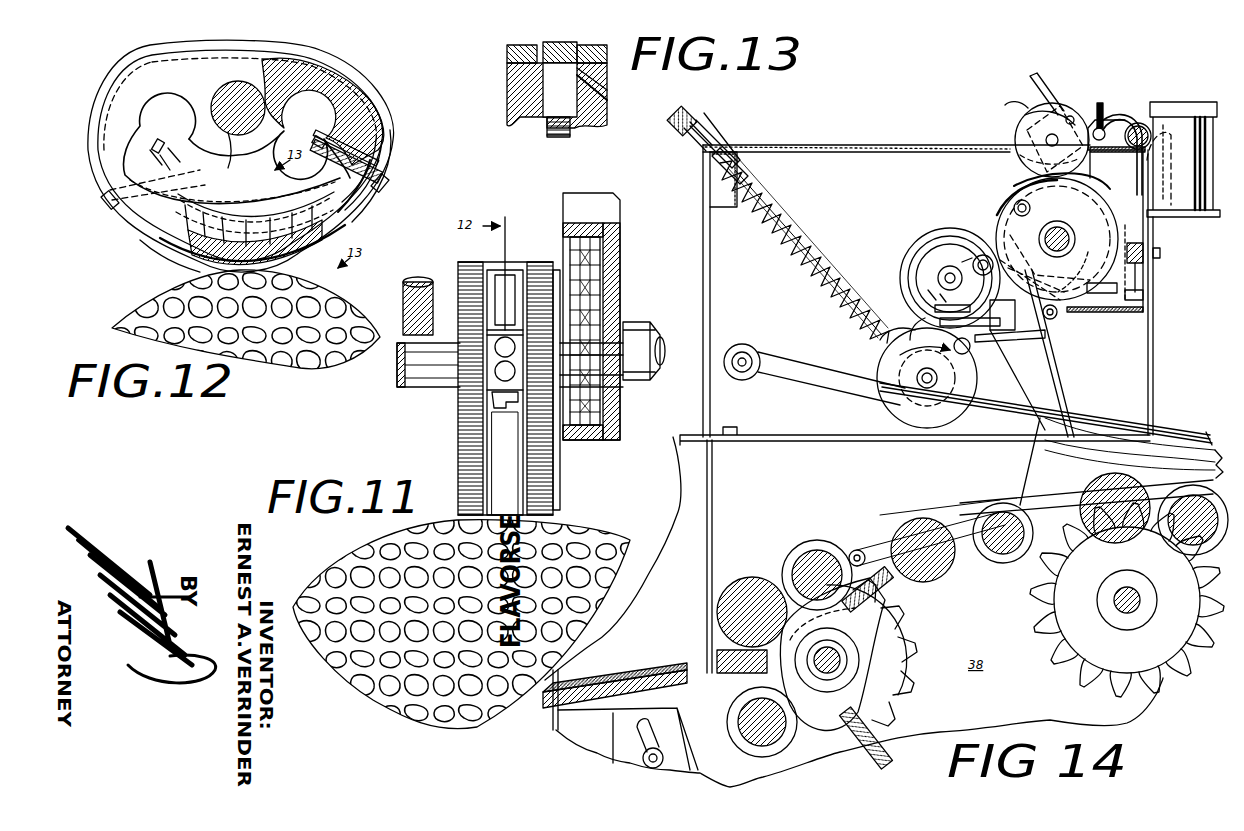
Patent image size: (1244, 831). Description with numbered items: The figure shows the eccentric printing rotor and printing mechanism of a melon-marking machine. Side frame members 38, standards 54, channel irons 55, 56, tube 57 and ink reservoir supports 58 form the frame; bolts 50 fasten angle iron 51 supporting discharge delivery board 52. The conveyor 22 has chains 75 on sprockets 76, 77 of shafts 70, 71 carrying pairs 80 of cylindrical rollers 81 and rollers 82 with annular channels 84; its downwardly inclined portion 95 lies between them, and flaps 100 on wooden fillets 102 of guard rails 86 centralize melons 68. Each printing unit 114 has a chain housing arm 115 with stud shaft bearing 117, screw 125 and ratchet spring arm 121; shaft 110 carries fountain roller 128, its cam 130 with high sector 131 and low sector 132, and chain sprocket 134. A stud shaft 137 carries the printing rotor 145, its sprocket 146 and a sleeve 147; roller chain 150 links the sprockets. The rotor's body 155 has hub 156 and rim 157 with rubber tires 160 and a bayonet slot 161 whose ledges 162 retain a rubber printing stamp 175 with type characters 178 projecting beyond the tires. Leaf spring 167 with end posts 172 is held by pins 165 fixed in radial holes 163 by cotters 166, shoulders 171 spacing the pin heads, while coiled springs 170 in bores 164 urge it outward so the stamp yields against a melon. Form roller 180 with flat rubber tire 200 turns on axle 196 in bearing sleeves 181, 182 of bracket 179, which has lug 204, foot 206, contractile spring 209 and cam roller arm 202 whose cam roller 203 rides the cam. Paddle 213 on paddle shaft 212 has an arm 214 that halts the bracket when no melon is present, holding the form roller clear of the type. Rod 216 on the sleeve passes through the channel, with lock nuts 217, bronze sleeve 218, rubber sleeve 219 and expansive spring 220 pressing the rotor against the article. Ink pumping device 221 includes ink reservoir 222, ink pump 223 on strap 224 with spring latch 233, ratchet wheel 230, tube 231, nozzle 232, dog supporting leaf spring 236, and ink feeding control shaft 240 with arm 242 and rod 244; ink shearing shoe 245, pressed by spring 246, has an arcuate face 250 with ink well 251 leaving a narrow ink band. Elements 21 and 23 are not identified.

In FIG. 13, the frame top rail 21 is at (906, 143).
In FIG. 14, the conveyor 22 is at (820, 532).
In FIG. 13, the drive assembly 23 is at (967, 120).
In FIG. 14, the side frame member 38 is at (854, 612).
In FIG. 14, the bolt 50 is at (662, 752).
In FIG. 14, the delivery board angle iron 51 is at (688, 712).
In FIG. 14, the discharge delivery board 52 is at (638, 665).
In FIG. 13, the short side standard 54 is at (703, 255).
In FIG. 13, the channel iron 55 is at (722, 208).
In FIG. 13, the channel iron 56 is at (1118, 314).
In FIG. 13, the tube 57 is at (745, 345).
In FIG. 13, the ink reservoir support 58 is at (1180, 217).
In FIG. 12, the melon 68 is at (348, 300).
In FIG. 11, the melon 68 is at (595, 530).
In FIG. 14, the shaft 70 is at (848, 658).
In FIG. 14, the shaft 71 is at (1118, 610).
In FIG. 14, the endless chain 75 is at (865, 550).
In FIG. 14, the sprocket 76 is at (900, 622).
In FIG. 14, the sprocket 77 is at (1045, 608).
In FIG. 14, the pair of rollers 80 is at (1100, 580).
In FIG. 14, the roller 81 is at (748, 580).
In FIG. 14, the roller 82 is at (805, 542).
In FIG. 14, the annular channel 84 is at (835, 552).
In FIG. 13, the guard rail 86 is at (1120, 412).
In FIG. 14, the downwardly inclined portion 95 is at (898, 505).
In FIG. 14, the flap 100 is at (1030, 490).
In FIG. 13, the wooden fillet 102 is at (1175, 440).
In FIG. 13, the shaft 110 is at (1075, 237).
In FIG. 13, the printing unit 114 is at (898, 264).
In FIG. 13, the chain housing arm 115 is at (905, 420).
In FIG. 11, the chain housing arm 115 is at (616, 260).
In FIG. 11, the stud shaft bearing 117 is at (616, 320).
In FIG. 13, the ratchet spring arm 121 is at (1031, 208).
In FIG. 13, the screw 125 is at (955, 352).
In FIG. 13, the fountain roller 128 is at (1005, 212).
In FIG. 13, the cam 130 is at (1103, 203).
In FIG. 13, the high sector 131 is at (1107, 213).
In FIG. 13, the low sector 132 is at (1102, 293).
In FIG. 13, the chain sprocket 134 is at (1080, 272).
In FIG. 12, the stud shaft 137 is at (228, 138).
In FIG. 13, the stud shaft 137 is at (915, 382).
In FIG. 11, the stud shaft 137 is at (662, 338).
In FIG. 12, the printing rotor 145 is at (138, 78).
In FIG. 11, the printing rotor 145 is at (456, 450).
In FIG. 13, the sprocket 146 is at (878, 372).
In FIG. 11, the sleeve 147 is at (410, 390).
In FIG. 13, the roller chain 150 is at (965, 410).
In FIG. 11, the roller chain 150 is at (600, 275).
In FIG. 12, the sector-like body 155 is at (338, 82).
In FIG. 12, the hub 156 is at (280, 123).
In FIG. 12, the rim 157 is at (382, 130).
In FIG. 13, the rim 157 is at (549, 122).
In FIG. 12, the endless rubber tire 160 is at (385, 108).
In FIG. 13, the endless rubber tire 160 is at (522, 45).
In FIG. 11, the endless rubber tire 160 is at (468, 262).
In FIG. 12, the bayonet slot 161 is at (386, 120).
In FIG. 13, the bayonet slot 161 is at (543, 75).
In FIG. 13, the ledge 162 is at (560, 42).
In FIG. 11, the ledge 162 is at (490, 337).
In FIG. 12, the radial hole 163 is at (158, 140).
In FIG. 12, the spring receiving bore 164 is at (240, 200).
In FIG. 13, the spring receiving bore 164 is at (596, 100).
In FIG. 12, the pin 165 is at (168, 150).
In FIG. 11, the pin 165 is at (498, 354).
In FIG. 12, the cotter 166 is at (170, 160).
In FIG. 12, the leaf spring 167 is at (380, 142).
In FIG. 13, the leaf spring 167 is at (600, 88).
In FIG. 11, the leaf spring 167 is at (498, 318).
In FIG. 12, the coiled compression spring 170 is at (262, 200).
In FIG. 13, the coiled compression spring 170 is at (548, 130).
In FIG. 12, the shoulder 171 is at (384, 172).
In FIG. 12, the end post 172 is at (104, 204).
In FIG. 11, the end post 172 is at (512, 369).
In FIG. 12, the rubber printing stamp 175 is at (360, 228).
In FIG. 11, the rubber printing stamp 175 is at (496, 421).
In FIG. 12, the type character 178 is at (157, 255).
In FIG. 13, the type character 178 is at (901, 322).
In FIG. 11, the type character 178 is at (495, 398).
In FIG. 13, the bracket 179 is at (968, 253).
In FIG. 13, the form roller 180 is at (925, 266).
In FIG. 13, the bearing sleeve 181 is at (983, 255).
In FIG. 13, the bearing sleeve 182 is at (940, 280).
In FIG. 13, the form roller axle 196 is at (944, 280).
In FIG. 13, the flat rubber tire 200 is at (945, 258).
In FIG. 13, the cam roller arm 202 is at (1032, 278).
In FIG. 13, the cam roller 203 is at (1050, 257).
In FIG. 13, the lug 204 is at (934, 308).
In FIG. 13, the foot 206 is at (1000, 344).
In FIG. 13, the contractile spring 209 is at (938, 322).
In FIG. 13, the paddle shaft 212 is at (1057, 315).
In FIG. 13, the article responsive paddle 213 is at (1064, 382).
In FIG. 13, the arm 214 is at (1010, 332).
In FIG. 13, the rod 216 is at (793, 228).
In FIG. 13, the lock nut 217 is at (690, 112).
In FIG. 13, the bronze sleeve 218 is at (748, 166).
In FIG. 13, the rubber sleeve 219 is at (706, 142).
In FIG. 13, the expansive coiled spring 220 is at (808, 250).
In FIG. 13, the ink pumping device 221 is at (1090, 107).
In FIG. 13, the ink reservoir 222 is at (1180, 96).
In FIG. 13, the ink pump 223 is at (1032, 118).
In FIG. 13, the strap 224 is at (1028, 78).
In FIG. 13, the ratchet wheel 230 is at (1015, 130).
In FIG. 13, the tube 231 is at (1140, 122).
In FIG. 13, the nozzle 232 is at (1018, 158).
In FIG. 13, the spring latch 233 is at (1070, 115).
In FIG. 13, the dog supporting leaf spring 236 is at (1030, 181).
In FIG. 13, the ink feeding control shaft 240 is at (1137, 158).
In FIG. 13, the arm 242 is at (1102, 129).
In FIG. 13, the rod 244 is at (1103, 106).
In FIG. 13, the ink shearing shoe 245 is at (1120, 278).
In FIG. 13, the spring 246 is at (1145, 298).
In FIG. 13, the arcuate shearing face 250 is at (1153, 318).
In FIG. 13, the ink well 251 is at (1133, 260).